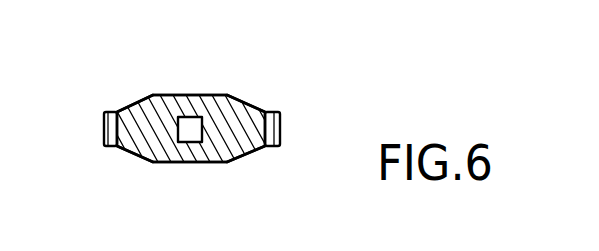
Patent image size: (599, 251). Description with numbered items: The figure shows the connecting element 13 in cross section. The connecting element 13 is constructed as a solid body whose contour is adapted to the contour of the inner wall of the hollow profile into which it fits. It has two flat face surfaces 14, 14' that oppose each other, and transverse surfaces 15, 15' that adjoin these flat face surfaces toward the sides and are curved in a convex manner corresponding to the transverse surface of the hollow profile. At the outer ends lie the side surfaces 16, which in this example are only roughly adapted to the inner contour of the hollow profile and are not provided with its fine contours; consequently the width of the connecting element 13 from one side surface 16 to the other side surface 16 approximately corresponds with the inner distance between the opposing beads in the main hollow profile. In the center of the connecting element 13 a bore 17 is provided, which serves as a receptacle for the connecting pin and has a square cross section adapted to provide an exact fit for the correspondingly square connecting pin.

The connecting element 13 is at (108, 100).
The flat face surface 14 is at (190, 57).
The flat face surface 14' is at (213, 191).
The transverse surface 15 is at (195, 65).
The transverse surface 15' is at (196, 175).
The side surface 16 is at (103, 130).
The bore 17 is at (192, 132).